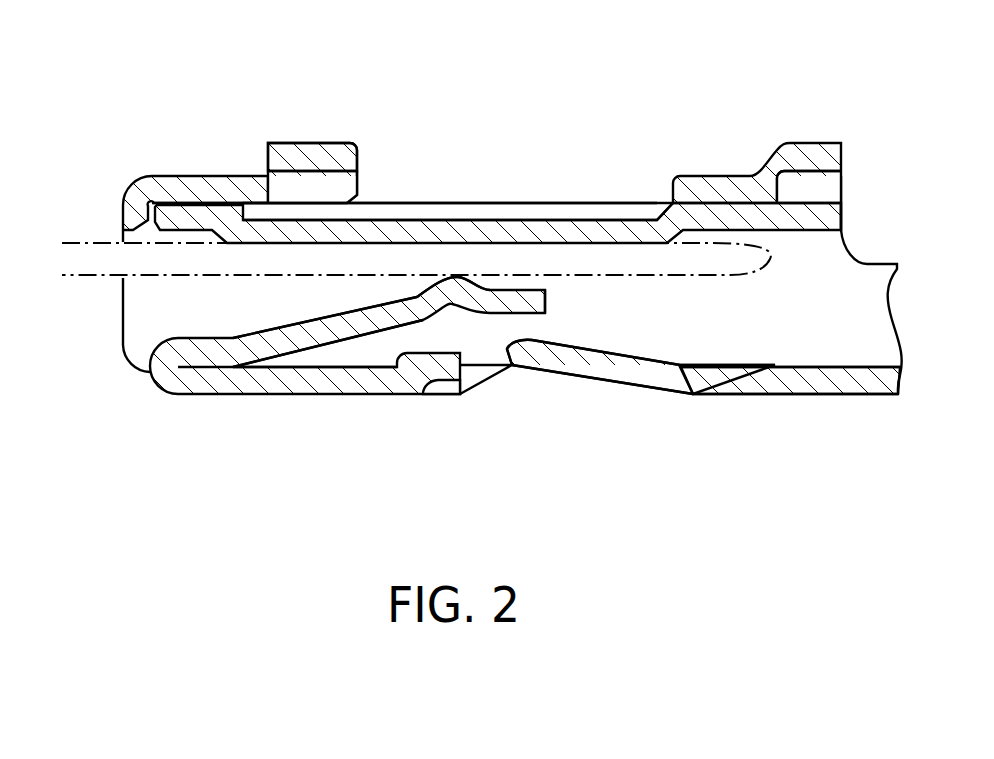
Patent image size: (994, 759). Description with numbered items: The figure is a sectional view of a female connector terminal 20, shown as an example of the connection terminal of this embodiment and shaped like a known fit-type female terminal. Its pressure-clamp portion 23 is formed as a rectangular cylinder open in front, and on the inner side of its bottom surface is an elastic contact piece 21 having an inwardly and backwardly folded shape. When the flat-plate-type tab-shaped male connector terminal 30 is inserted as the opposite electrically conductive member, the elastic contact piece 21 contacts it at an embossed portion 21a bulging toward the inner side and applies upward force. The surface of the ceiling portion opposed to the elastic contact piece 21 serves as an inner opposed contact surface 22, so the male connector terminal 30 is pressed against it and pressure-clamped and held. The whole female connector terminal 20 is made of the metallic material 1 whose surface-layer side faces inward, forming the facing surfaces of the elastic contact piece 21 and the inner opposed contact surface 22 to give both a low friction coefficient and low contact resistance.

The metallic material 1 is at (523, 218).
The female connector terminal 20 is at (780, 107).
The elastic contact piece 21 is at (328, 330).
The embossed portion 21a is at (457, 276).
The inner opposed contact surface 22 is at (585, 242).
The pressure-clamp portion 23 is at (630, 332).
The male connector terminal 30 is at (97, 272).